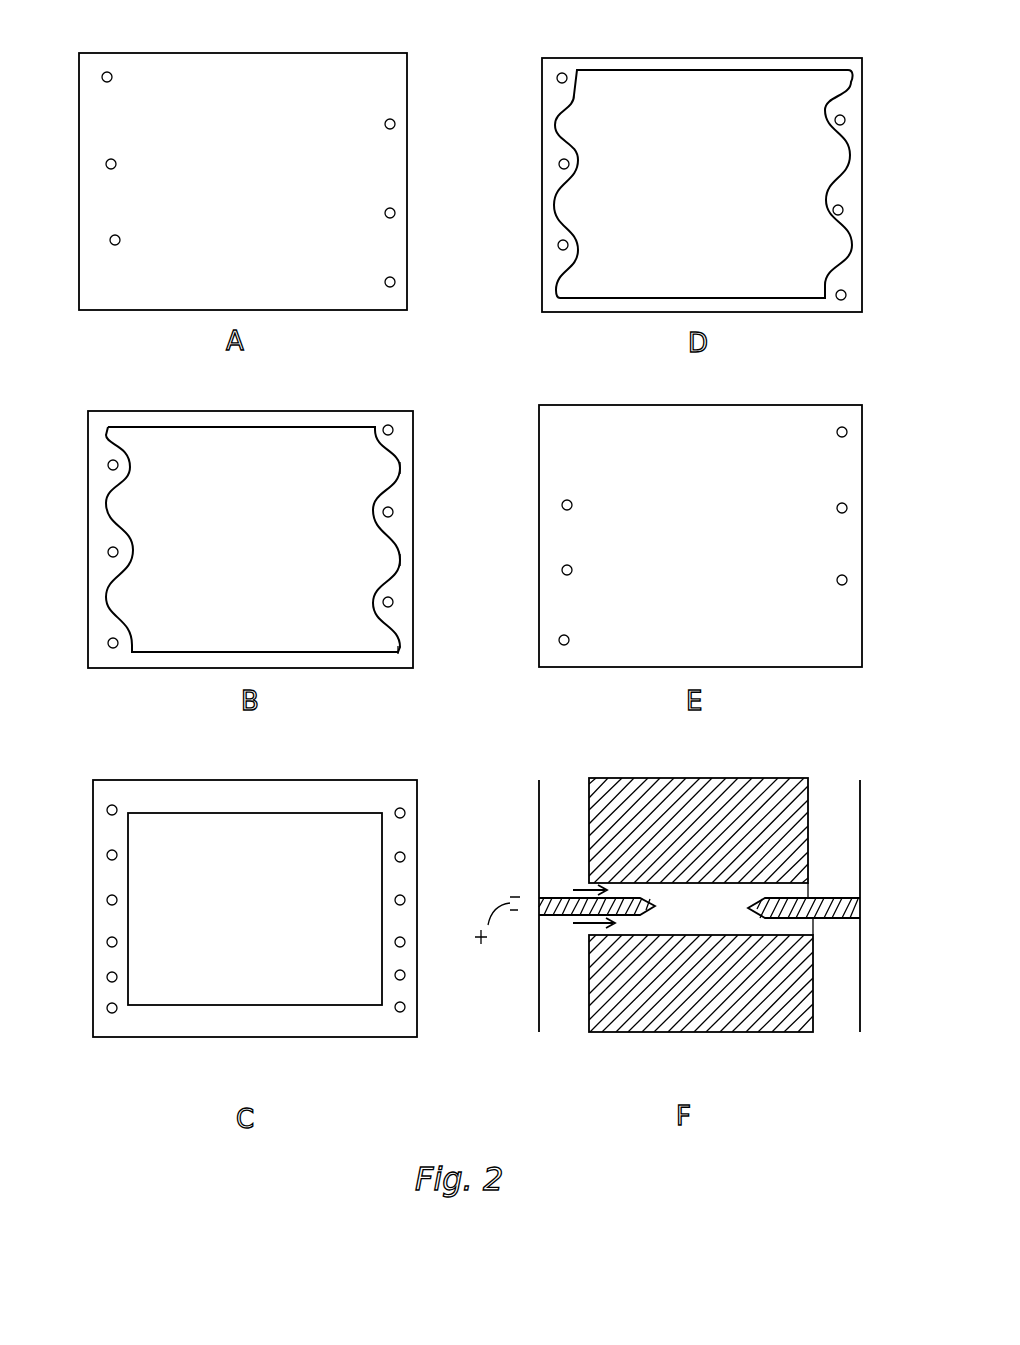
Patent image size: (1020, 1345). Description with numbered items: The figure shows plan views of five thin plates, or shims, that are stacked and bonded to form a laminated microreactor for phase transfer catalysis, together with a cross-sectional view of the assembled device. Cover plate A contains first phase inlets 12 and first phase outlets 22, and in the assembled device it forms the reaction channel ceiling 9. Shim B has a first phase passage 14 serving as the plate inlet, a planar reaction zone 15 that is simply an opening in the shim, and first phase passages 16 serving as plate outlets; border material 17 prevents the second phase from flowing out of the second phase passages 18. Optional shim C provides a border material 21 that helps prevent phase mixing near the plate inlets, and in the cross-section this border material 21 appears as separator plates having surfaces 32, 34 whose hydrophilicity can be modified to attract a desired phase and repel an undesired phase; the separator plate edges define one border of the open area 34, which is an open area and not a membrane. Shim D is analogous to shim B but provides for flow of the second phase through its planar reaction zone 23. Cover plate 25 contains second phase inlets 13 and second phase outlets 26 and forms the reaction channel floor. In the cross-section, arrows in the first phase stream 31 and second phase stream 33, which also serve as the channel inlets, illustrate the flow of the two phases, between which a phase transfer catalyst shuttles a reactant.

In FIG. 2A, the reaction channel ceiling 9 is at (368, 293).
In FIG. 2F, the reaction channel ceiling 9 is at (800, 835).
In FIG. 2A, the first phase inlets 12 is at (109, 72).
In FIG. 2A, the first phase outlets 22 is at (396, 124).
In FIG. 2D, the planar reaction zone 23 is at (805, 165).
In FIG. 2B, the border material 17 is at (310, 418).
In FIG. 2B, the planar reaction zone 15 is at (150, 505).
In FIG. 2B, the first phase passage 14 is at (108, 430).
In FIG. 2C, the first phase passage 14 is at (108, 810).
In FIG. 2B, the first phase passage 16 is at (395, 468).
In FIG. 2B, the second phase passages 18 is at (395, 430).
In FIG. 2E, the cover plate 25 is at (770, 398).
In FIG. 2F, the cover plate 25 is at (742, 1020).
In FIG. 2E, the second phase inlets 13 is at (560, 505).
In FIG. 2E, the second phase outlets 26 is at (850, 580).
In FIG. 2C, the border material 21 is at (405, 830).
In FIG. 2F, the border material 21 is at (848, 905).
In FIG. 2F, the first phase stream 31 is at (590, 888).
In FIG. 2F, the surface 32 is at (825, 895).
In FIG. 2F, the second phase stream 33 is at (583, 925).
In FIG. 2F, the open area 34 is at (708, 928).